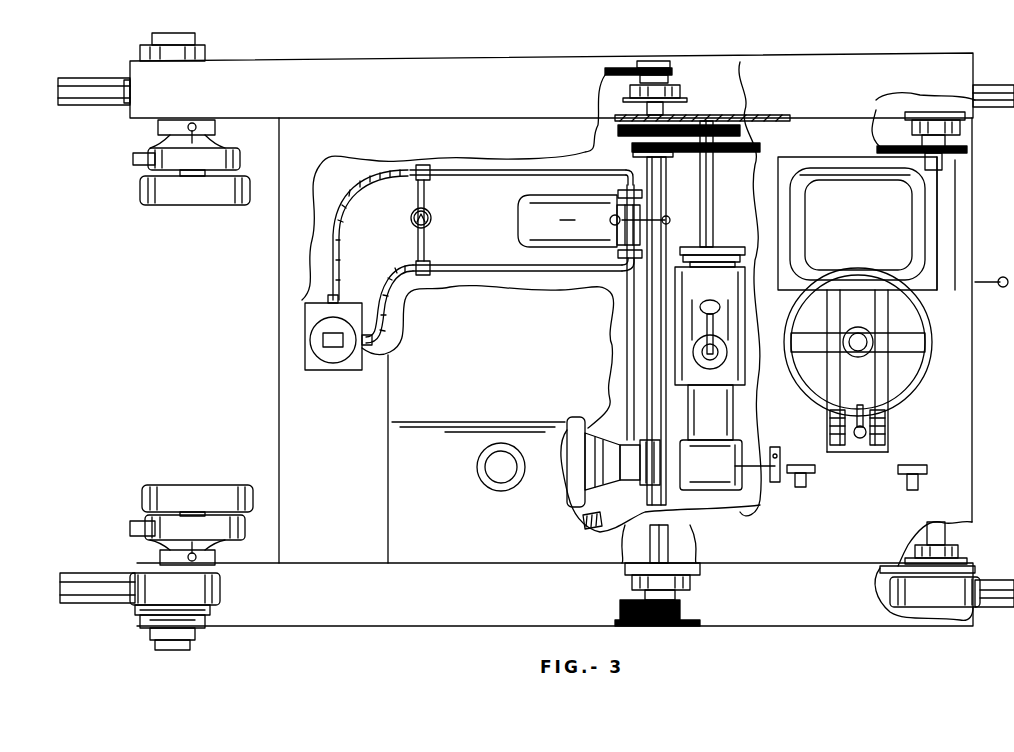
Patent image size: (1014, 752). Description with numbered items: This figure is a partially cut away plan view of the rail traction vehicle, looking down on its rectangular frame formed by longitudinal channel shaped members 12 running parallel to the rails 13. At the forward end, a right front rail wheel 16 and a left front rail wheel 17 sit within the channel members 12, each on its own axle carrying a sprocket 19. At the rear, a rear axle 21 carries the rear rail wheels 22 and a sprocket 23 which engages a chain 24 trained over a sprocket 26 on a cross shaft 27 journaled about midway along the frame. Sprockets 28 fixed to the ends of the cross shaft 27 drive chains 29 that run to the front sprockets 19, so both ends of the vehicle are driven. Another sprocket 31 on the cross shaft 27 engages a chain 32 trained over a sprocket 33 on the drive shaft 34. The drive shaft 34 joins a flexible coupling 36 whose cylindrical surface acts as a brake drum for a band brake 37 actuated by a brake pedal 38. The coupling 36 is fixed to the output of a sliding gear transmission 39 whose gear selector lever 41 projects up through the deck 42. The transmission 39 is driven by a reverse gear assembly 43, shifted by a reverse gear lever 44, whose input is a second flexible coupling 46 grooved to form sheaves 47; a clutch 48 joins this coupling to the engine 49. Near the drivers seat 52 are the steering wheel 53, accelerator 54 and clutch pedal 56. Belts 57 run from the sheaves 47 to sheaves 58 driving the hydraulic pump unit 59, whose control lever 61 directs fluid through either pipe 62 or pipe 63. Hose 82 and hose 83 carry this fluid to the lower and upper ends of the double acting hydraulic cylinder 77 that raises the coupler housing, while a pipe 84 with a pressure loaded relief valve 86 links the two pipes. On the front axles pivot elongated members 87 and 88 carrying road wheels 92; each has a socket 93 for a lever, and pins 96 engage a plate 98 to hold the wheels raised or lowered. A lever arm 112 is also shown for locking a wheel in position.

The longitudinal channel shaped members 12 is at (316, 63).
The rails 13 is at (85, 582).
The right front rail wheel 16 is at (125, 112).
The left front rail wheel 17 is at (135, 598).
The sprockets 19 is at (200, 620).
The rear axle 21 is at (945, 533).
The rear rail wheels 22 is at (975, 107).
The sprocket 23 is at (960, 153).
The chain 24 is at (880, 120).
The sprocket 26 is at (633, 155).
The cross shaft 27 is at (668, 545).
The sprockets 28 is at (665, 62).
The chains 29 is at (628, 68).
The sprocket 31 is at (615, 118).
The chain 32 is at (705, 125).
The sprocket 33 is at (720, 143).
The drive shaft 34 is at (710, 210).
The flexible coupling 36 is at (718, 247).
The band brake 37 is at (676, 240).
The brake pedal 38 is at (805, 465).
The transmission 39 is at (740, 325).
The gear selector lever 41 is at (726, 345).
The deck 42 is at (945, 410).
The reverse gear assembly 43 is at (730, 485).
The reverse gear lever 44 is at (1003, 277).
The second flexible coupling 46 is at (645, 440).
The sheaves 47 is at (625, 497).
The clutch 48 is at (590, 470).
The engine 49 is at (574, 417).
The drivers seat 52 is at (790, 215).
The steering wheel 53 is at (925, 340).
The accelerator 54 is at (780, 480).
The clutch pedal 56 is at (915, 465).
The belts 57 is at (626, 295).
The sheaves 58 is at (650, 205).
The hydraulic pump unit 59 is at (530, 203).
The lever 61 is at (610, 222).
The pipe 62 is at (476, 265).
The pipe 63 is at (455, 176).
The double acting hydraulic cylinder 77 is at (310, 330).
The flexible hose 82 is at (394, 267).
The hose 83 is at (352, 200).
The pipe 84 is at (426, 240).
The pressure loaded relief valve 86 is at (412, 216).
The elongated member 87 is at (240, 160).
The elongated member 88 is at (245, 527).
The road wheels 92 is at (232, 205).
The socket 93 is at (133, 159).
The pins 96 is at (190, 123).
The plate 98 is at (215, 127).
The lever arm 112 is at (870, 418).